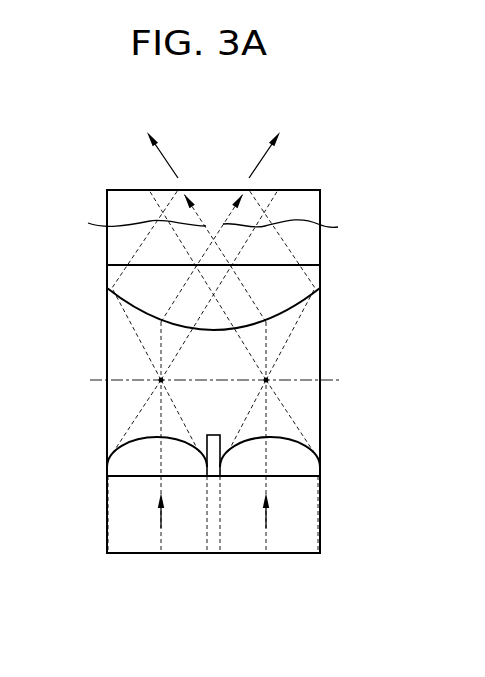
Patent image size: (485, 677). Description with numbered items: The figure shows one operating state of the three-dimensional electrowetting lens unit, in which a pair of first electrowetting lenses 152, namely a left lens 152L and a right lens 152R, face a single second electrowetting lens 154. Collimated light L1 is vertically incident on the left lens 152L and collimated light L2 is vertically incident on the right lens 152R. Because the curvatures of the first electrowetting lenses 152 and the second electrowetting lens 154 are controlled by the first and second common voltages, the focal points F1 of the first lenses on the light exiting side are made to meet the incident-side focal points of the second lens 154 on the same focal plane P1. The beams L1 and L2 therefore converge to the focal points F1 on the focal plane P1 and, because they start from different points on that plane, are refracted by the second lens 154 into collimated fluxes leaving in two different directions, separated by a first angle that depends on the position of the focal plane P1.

The first electrowetting lenses 152 is at (229, 448).
The first electrowetting lens (left lens) 152L is at (118, 466).
The first electrowetting lens (right lens) 152R is at (333, 446).
The second electrowetting lens 154 is at (113, 279).
The focal plane P1 is at (203, 380).
The focal point F1 is at (159, 378).
The light (beam) L1 is at (162, 530).
The light (beam) L2 is at (267, 530).